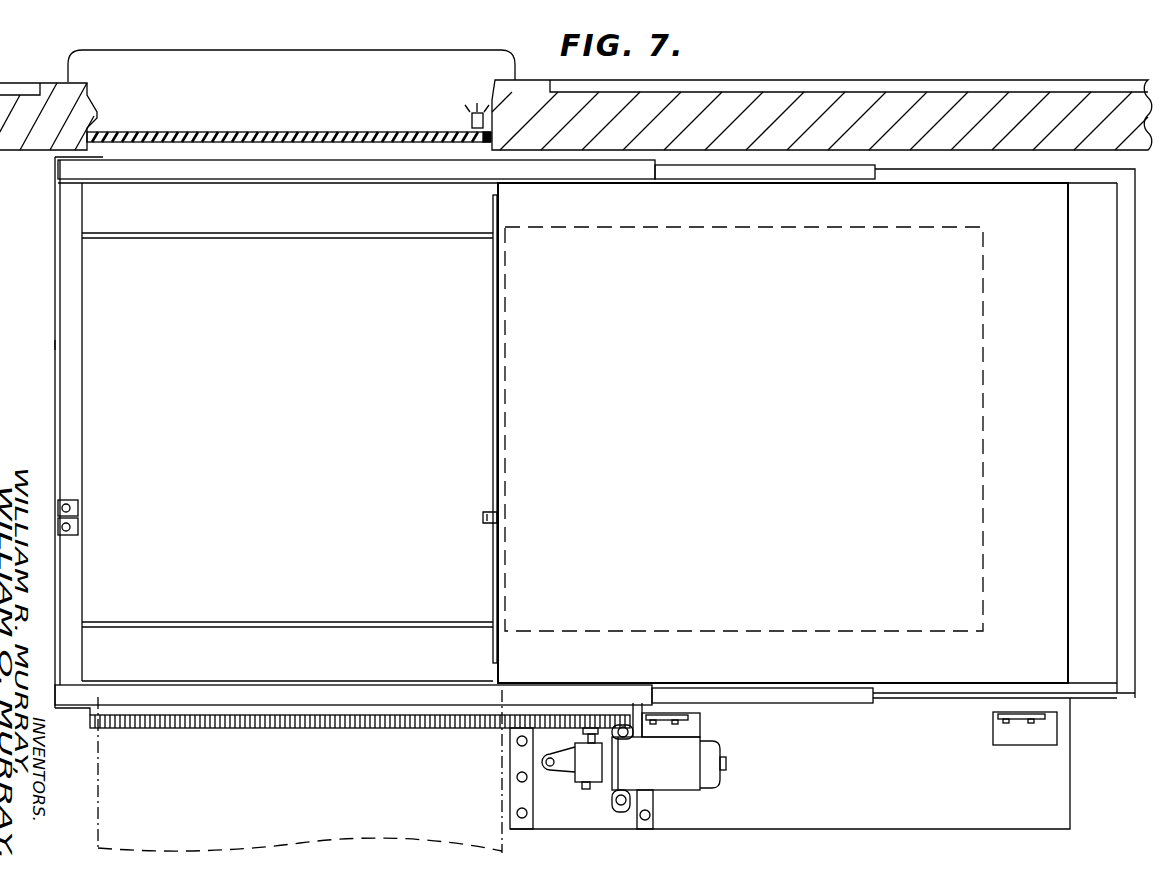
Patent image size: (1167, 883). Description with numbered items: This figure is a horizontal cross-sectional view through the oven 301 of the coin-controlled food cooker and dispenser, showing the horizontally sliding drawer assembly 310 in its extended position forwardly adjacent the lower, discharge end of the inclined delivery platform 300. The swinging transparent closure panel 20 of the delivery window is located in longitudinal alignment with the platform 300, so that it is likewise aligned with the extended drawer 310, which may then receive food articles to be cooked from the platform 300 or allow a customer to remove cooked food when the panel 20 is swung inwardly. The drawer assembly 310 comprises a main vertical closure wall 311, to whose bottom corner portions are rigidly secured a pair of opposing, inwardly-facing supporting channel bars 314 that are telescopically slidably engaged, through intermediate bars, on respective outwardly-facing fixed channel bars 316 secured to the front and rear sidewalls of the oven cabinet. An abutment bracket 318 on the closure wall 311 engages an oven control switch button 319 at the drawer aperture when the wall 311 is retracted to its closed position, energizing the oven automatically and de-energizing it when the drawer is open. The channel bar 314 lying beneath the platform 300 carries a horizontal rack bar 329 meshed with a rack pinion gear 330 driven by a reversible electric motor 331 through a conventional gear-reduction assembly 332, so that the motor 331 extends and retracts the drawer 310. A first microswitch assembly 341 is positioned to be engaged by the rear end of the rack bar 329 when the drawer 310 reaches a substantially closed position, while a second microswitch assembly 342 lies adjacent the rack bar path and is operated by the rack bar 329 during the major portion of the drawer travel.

The transparent closure panel 20 is at (208, 131).
The inclined delivery platform 300 is at (97, 806).
The oven 301 is at (750, 358).
The sliding drawer assembly 310 is at (47, 352).
The main vertical closure wall 311 is at (67, 405).
The supporting channel bars 314 is at (244, 172).
The fixed channel bars 316 is at (929, 182).
The abutment bracket 318 is at (78, 518).
The oven control switch button 319 is at (483, 517).
The horizontal rack bar 329 is at (236, 728).
The rack pinion gear 330 is at (596, 714).
The electric motor 331 is at (688, 781).
The gear-reduction assembly 332 is at (582, 763).
The first microswitch assembly 341 is at (1017, 726).
The second microswitch assembly 342 is at (665, 723).